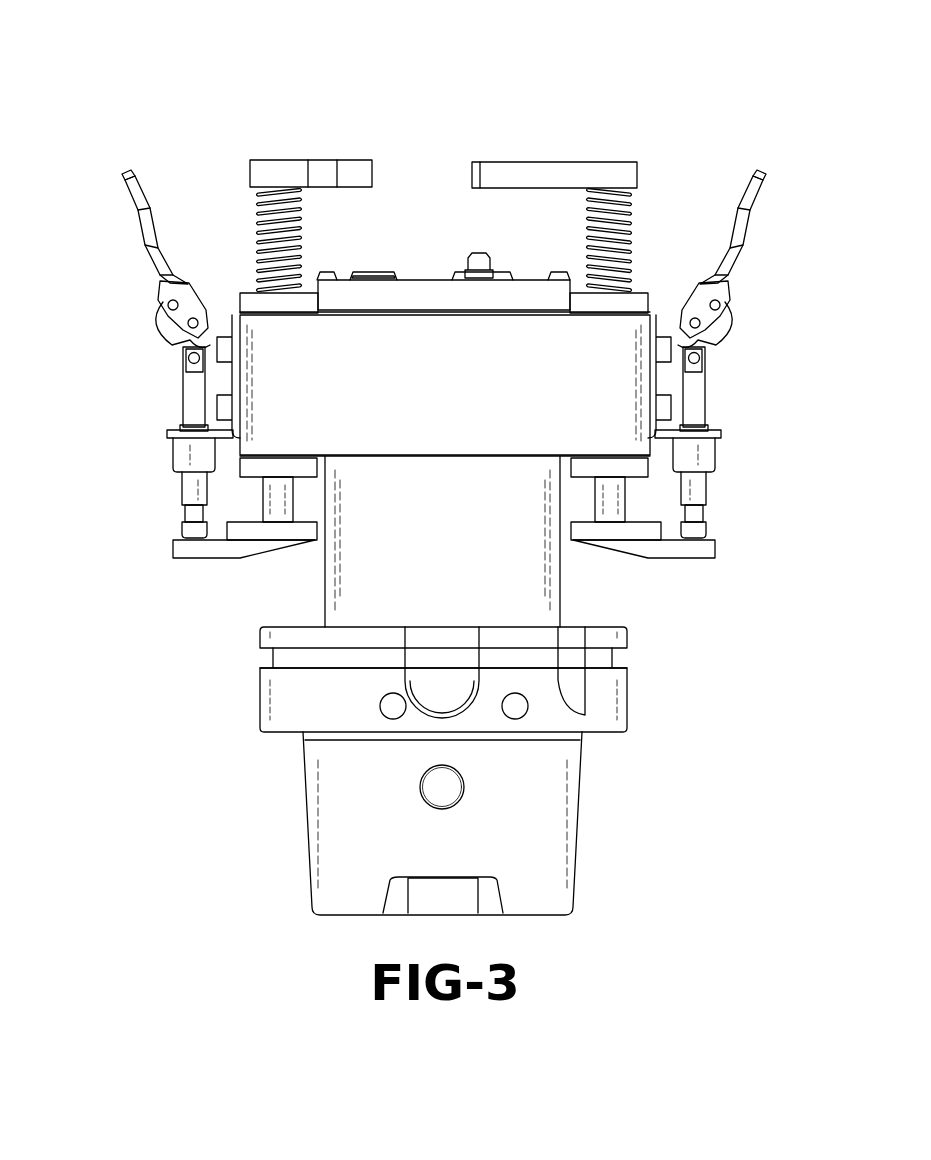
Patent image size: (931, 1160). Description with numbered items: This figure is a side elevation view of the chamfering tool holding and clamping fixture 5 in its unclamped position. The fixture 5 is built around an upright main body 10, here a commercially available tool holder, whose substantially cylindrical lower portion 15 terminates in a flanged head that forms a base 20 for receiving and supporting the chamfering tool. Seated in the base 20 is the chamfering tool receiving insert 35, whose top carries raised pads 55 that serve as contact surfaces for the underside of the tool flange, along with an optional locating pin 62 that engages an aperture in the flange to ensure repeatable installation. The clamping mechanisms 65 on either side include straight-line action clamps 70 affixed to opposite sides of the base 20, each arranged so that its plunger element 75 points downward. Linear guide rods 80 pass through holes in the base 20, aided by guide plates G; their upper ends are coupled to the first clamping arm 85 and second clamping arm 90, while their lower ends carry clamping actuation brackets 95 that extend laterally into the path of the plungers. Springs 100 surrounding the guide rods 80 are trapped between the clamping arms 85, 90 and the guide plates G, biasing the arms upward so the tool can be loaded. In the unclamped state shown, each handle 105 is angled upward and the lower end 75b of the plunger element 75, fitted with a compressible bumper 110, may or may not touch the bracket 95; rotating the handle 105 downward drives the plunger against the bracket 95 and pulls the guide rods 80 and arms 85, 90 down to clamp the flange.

The chamfering tool holding and clamping fixture 5 is at (176, 100).
The main body 10 is at (215, 792).
The cylindrical lower portion 15 is at (660, 690).
The base 20 is at (458, 420).
The chamfering tool receiving insert 35 is at (430, 290).
The raised pads 55 is at (372, 278).
The locating pin 62 is at (470, 266).
The clamping mechanisms 65 is at (142, 310).
The straight-line action clamps 70 is at (162, 232).
The plunger element 75 is at (190, 392).
The lower end of clamp plunger element 75b is at (168, 500).
The linear guide rods 80 is at (283, 507).
The first clamping arm 85 is at (306, 162).
The second clamping arm 90 is at (522, 162).
The clamping actuation bracket 95 is at (213, 548).
The spring 100 is at (262, 222).
The handle 105 is at (128, 178).
The compressible bumper 110 is at (186, 530).
The guide plates G is at (250, 300).